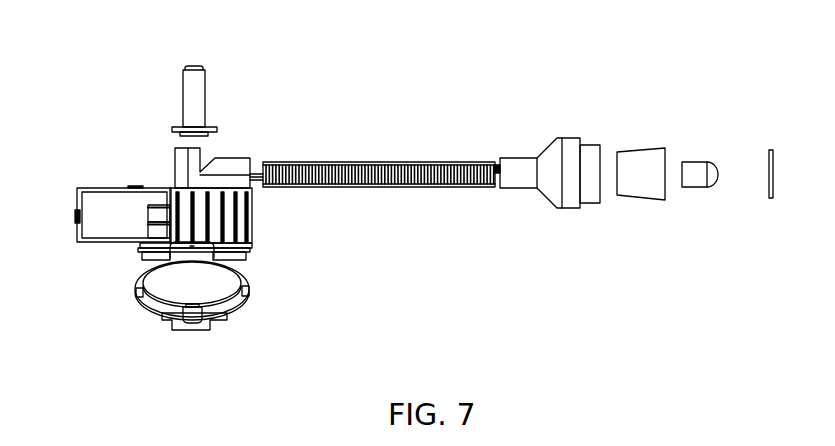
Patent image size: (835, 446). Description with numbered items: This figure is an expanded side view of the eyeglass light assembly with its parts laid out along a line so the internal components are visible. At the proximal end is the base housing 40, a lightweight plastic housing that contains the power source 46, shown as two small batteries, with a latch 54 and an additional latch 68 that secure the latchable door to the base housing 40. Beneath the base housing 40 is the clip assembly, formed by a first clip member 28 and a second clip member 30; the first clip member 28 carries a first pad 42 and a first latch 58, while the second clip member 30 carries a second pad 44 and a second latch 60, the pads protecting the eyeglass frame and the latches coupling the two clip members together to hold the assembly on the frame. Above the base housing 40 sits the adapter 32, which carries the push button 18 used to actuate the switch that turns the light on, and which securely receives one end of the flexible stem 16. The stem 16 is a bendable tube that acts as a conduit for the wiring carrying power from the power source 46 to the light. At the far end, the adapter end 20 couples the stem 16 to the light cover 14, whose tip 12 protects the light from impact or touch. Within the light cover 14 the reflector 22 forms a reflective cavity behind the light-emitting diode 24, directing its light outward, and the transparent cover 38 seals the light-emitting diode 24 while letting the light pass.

The tip 12 is at (590, 144).
The light cover 14 is at (558, 139).
The stem 16 is at (365, 162).
The push button 18 is at (192, 66).
The adapter end 20 is at (520, 158).
The reflector 22 is at (643, 150).
The light-emitting diode 24 is at (693, 161).
The first clip member 28 is at (138, 246).
The second clip member 30 is at (142, 312).
The adapter 32 is at (228, 164).
The transparent cover 38 is at (772, 150).
The base housing 40 is at (253, 224).
The first pad 42 is at (237, 258).
The second pad 44 is at (157, 277).
The power source 46 is at (155, 216).
The latch 54 is at (130, 186).
The first latch 58 is at (192, 248).
The second latch 60 is at (188, 323).
The additional latch 68 is at (75, 216).